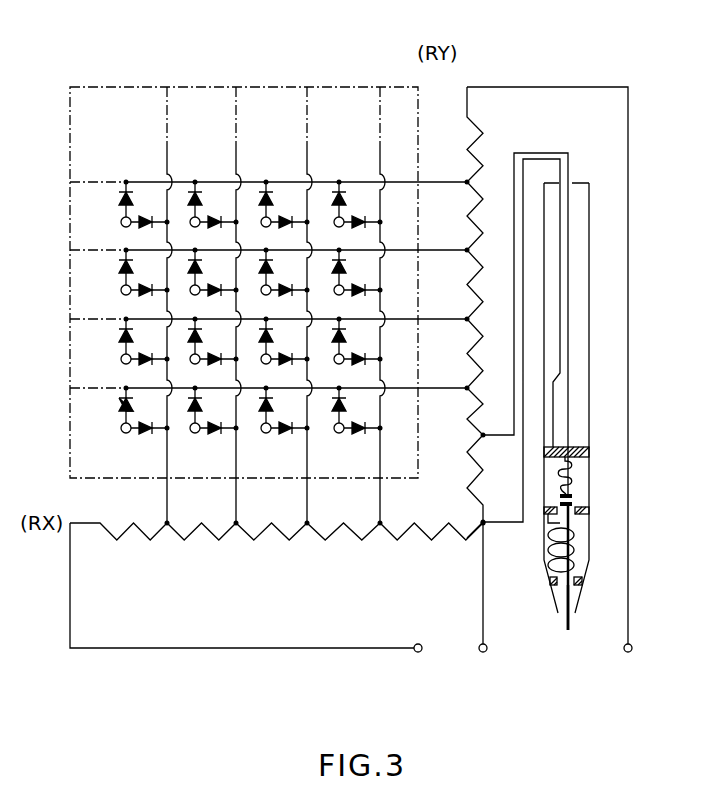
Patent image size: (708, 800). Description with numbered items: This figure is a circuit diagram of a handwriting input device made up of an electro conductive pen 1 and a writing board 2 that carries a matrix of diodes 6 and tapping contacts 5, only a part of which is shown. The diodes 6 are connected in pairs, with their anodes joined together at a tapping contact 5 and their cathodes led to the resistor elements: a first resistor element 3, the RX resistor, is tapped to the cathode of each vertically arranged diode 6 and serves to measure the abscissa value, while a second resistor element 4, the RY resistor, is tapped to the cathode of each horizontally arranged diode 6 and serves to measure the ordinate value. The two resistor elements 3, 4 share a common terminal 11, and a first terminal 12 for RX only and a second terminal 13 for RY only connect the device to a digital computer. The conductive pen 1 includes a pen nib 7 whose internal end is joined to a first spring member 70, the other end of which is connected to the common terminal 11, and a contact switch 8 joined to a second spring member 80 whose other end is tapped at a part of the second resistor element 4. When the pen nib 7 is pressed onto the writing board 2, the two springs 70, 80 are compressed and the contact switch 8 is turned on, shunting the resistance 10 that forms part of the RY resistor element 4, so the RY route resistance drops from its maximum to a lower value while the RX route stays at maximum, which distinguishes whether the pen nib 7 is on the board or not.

The electro conductive pen 1 is at (581, 178).
The writing board 2 is at (193, 80).
The first resistor element 3 is at (253, 542).
The second resistor element 4 is at (472, 212).
The tapping contact 5 is at (120, 430).
The diode 6 is at (119, 405).
The pen nib 7 is at (569, 633).
The contact switch 8 is at (578, 500).
The resistance 10 is at (466, 488).
The common terminal 11 is at (485, 653).
The first terminal 12 is at (418, 653).
The second terminal 13 is at (630, 653).
The first spring member 70 is at (578, 547).
The second spring member 80 is at (572, 473).